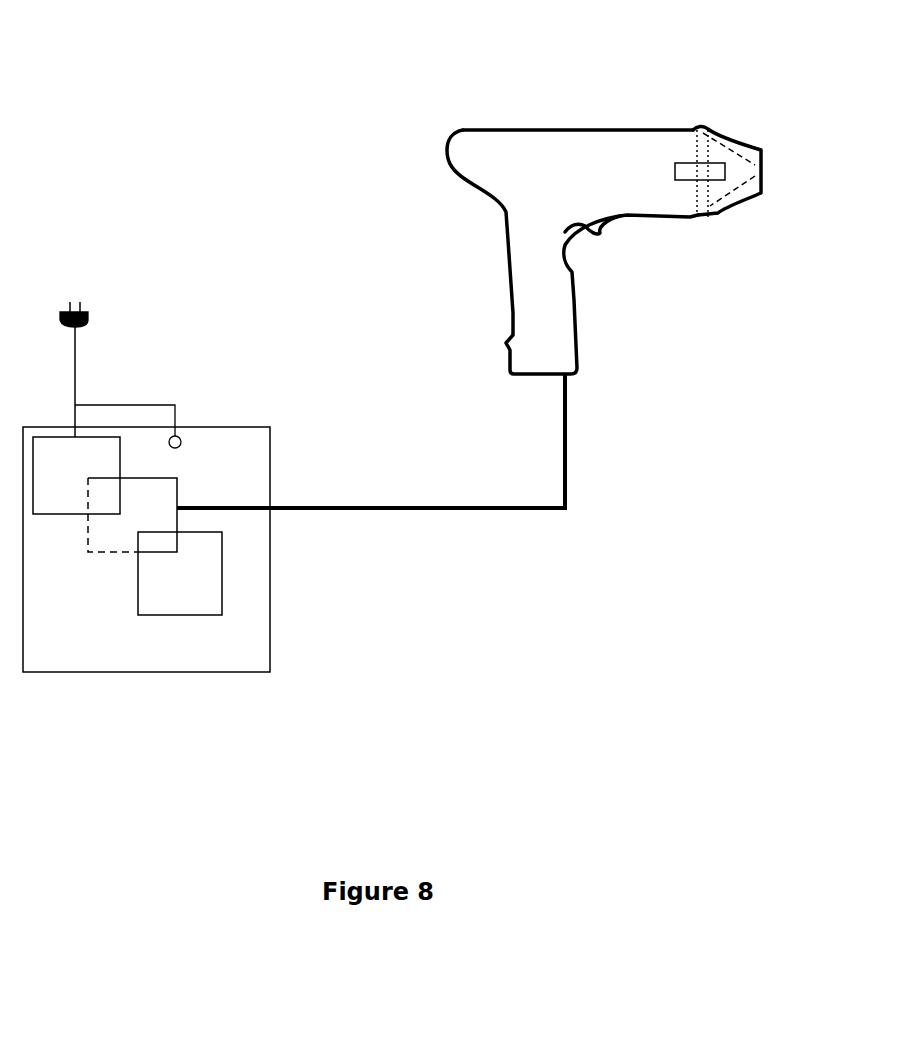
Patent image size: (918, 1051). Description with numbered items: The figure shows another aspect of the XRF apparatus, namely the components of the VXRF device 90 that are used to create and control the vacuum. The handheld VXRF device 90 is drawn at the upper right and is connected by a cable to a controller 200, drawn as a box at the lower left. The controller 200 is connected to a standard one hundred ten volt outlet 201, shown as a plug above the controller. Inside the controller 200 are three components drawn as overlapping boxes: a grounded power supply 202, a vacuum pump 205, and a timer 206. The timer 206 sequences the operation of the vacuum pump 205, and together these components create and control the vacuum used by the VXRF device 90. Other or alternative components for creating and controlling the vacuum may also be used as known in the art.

The VXRF device 90 is at (760, 97).
The controller 200 is at (25, 697).
The standard 110 volt outlet 201 is at (88, 342).
The grounded power supply 202 is at (76, 475).
The vacuum pump 205 is at (132, 515).
The timer 206 is at (180, 573).